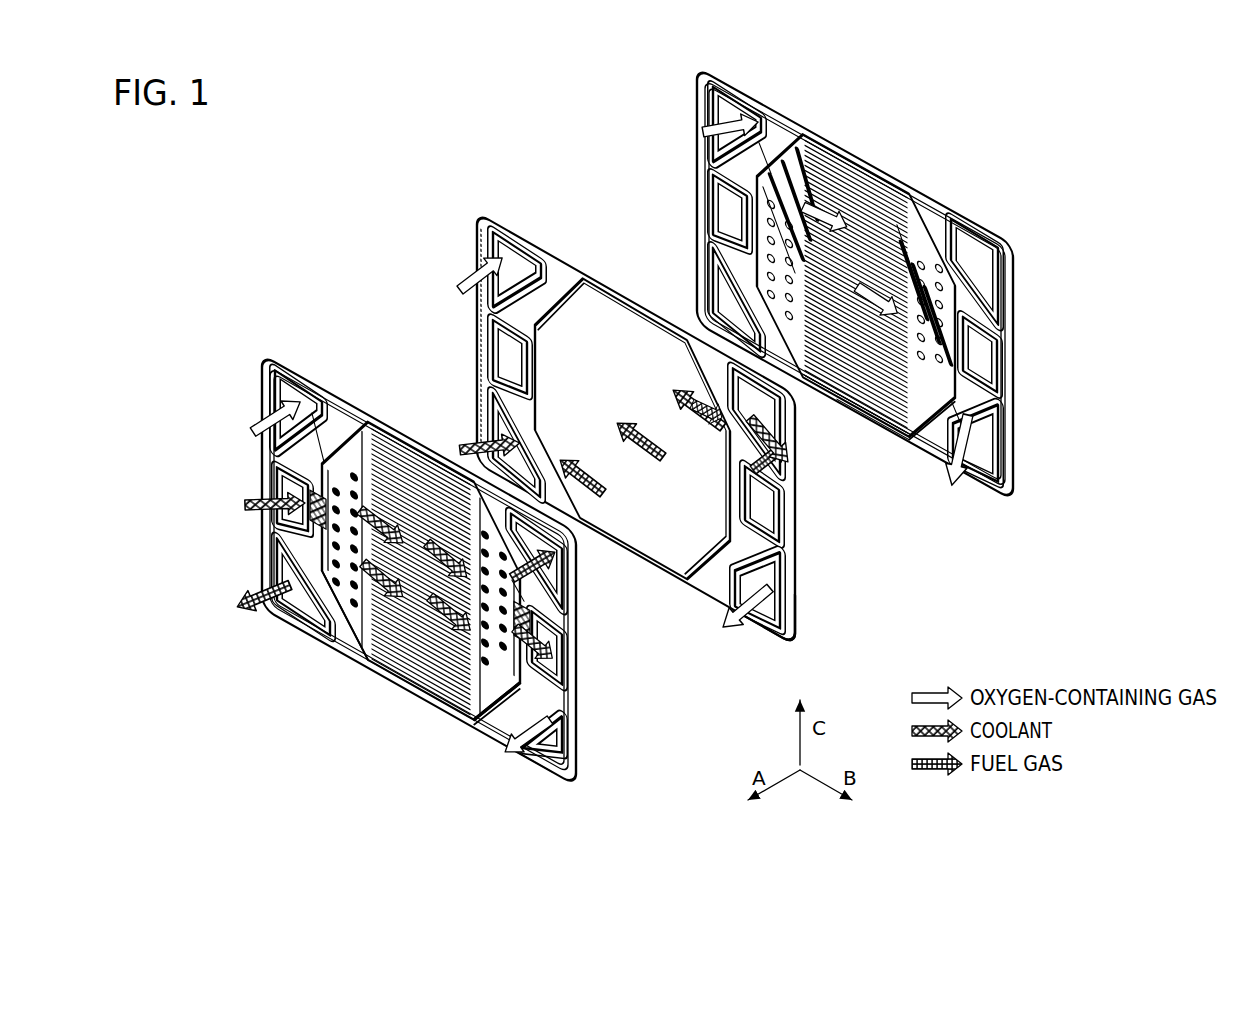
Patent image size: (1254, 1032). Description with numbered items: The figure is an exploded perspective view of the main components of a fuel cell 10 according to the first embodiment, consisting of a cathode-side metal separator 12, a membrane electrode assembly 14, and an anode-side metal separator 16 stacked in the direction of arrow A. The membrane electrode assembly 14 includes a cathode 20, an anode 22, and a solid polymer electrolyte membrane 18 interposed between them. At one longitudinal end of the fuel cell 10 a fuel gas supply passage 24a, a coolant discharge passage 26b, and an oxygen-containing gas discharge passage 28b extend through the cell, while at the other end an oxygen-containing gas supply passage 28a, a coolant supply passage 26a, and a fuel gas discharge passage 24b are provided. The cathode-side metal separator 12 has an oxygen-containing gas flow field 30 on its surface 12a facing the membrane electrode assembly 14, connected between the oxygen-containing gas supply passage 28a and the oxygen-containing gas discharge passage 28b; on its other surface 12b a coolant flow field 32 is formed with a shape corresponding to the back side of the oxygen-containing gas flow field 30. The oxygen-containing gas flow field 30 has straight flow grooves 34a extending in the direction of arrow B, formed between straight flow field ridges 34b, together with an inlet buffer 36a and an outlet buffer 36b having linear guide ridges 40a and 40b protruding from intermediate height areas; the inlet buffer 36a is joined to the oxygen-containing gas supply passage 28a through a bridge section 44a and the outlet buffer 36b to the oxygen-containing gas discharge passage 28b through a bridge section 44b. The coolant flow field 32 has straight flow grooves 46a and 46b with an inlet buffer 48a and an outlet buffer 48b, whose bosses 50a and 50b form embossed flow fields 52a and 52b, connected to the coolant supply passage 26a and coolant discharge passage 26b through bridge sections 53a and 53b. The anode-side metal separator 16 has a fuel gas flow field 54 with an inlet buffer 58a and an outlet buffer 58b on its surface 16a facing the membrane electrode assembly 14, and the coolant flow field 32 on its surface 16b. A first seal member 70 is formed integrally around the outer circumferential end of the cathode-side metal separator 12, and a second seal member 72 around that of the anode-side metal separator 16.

The fuel cell 10 is at (266, 163).
The cathode-side metal separator 12 is at (1014, 242).
The surface of cathode-side metal separator 12a is at (945, 452).
The other surface of cathode-side metal separator 12b is at (910, 433).
The membrane electrode assembly 14 is at (480, 214).
The anode-side metal separator 16 is at (262, 352).
The surface of anode-side metal separator 16a is at (505, 735).
The surface of anode-side metal separator 16b is at (520, 760).
The solid polymer electrolyte membrane 18 is at (775, 645).
The cathode 20 is at (714, 540).
The anode 22 is at (683, 596).
The fuel gas supply passage 24a is at (560, 590).
The fuel gas discharge passage 24b is at (290, 564).
The coolant supply passage 26a is at (290, 482).
The coolant discharge passage 26b is at (556, 662).
The oxygen-containing gas supply passage 28a is at (290, 395).
The oxygen-containing gas discharge passage 28b is at (556, 716).
The oxygen-containing gas flow field 30 is at (870, 200).
The coolant flow field 32 is at (392, 462).
The straight flow grooves 34a is at (833, 390).
The straight flow field ridges 34b is at (870, 395).
The inlet buffer 36a is at (800, 135).
The outlet buffer 36b is at (925, 238).
The linear guide ridges 40a is at (768, 150).
The linear guide ridges 40b is at (960, 290).
The bridge section 44a is at (712, 143).
The bridge section 44b is at (990, 410).
The straight flow grooves 46a is at (438, 645).
The second fuel gas flow field portion 46b is at (430, 620).
The inlet buffer 48a is at (340, 590).
The outlet buffer 48b is at (470, 652).
The bosses 50a is at (376, 440).
The bosses 50b is at (470, 695).
The embossed flow field 52a is at (336, 546).
The embossed flow field 52b is at (538, 638).
The bridge section 53a is at (330, 458).
The bridge section 53b is at (540, 605).
The fuel gas flow field 54 is at (428, 442).
The inlet buffer 58a is at (470, 700).
The outlet buffer 58b is at (333, 630).
The first seal member 70 is at (1013, 462).
The second seal member 72 is at (572, 762).